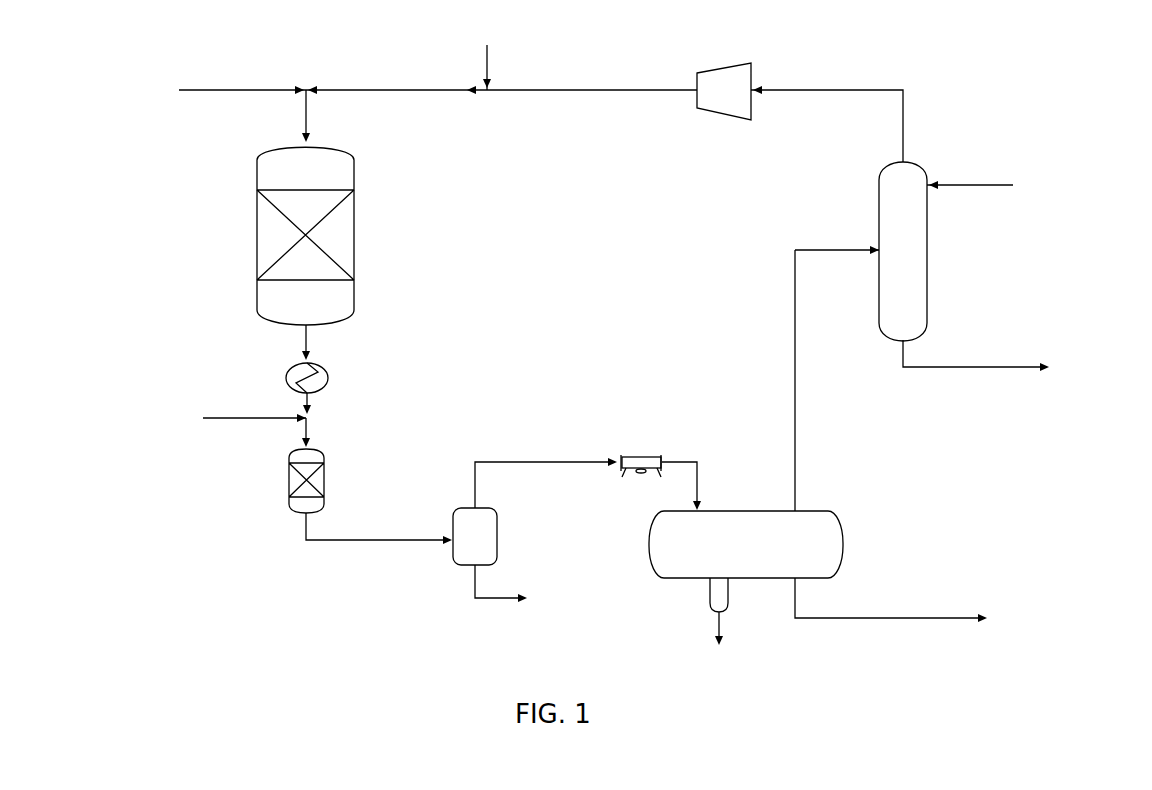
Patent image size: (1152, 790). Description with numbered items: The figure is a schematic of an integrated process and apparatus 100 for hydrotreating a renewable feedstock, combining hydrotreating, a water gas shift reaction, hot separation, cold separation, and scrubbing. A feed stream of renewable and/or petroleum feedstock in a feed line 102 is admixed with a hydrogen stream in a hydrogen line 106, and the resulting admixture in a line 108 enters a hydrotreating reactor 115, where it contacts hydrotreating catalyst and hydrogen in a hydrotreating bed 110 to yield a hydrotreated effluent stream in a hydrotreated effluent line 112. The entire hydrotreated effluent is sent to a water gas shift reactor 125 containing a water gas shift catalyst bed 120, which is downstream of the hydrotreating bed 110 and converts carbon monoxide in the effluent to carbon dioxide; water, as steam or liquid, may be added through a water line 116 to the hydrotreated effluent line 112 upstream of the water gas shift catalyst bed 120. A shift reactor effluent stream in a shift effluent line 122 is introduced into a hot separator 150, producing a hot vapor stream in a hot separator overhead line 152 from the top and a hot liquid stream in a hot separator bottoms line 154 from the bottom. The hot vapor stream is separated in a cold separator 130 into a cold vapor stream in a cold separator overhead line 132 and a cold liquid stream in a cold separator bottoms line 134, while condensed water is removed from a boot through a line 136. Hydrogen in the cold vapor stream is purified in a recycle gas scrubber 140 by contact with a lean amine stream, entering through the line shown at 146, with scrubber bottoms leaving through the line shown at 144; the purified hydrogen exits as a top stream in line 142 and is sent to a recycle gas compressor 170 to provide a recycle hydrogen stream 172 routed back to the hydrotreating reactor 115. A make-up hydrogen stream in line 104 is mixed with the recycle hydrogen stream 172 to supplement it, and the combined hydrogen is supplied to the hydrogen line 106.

The integrated process and apparatus 100 is at (1066, 68).
The feed line 102 is at (200, 91).
The make-up hydrogen line 104 is at (489, 58).
The hydrogen line 106 is at (340, 90).
The admixture line 108 is at (307, 112).
The hydrotreating bed 110 is at (355, 235).
The hydrotreated effluent line 112 is at (308, 340).
The hydrotreating reactor 115 is at (355, 177).
The water line 116 is at (218, 418).
The water gas shift catalyst bed 120 is at (289, 480).
The shift effluent line 122 is at (312, 541).
The water gas shift reactor 125 is at (324, 510).
The cold separator 130 is at (843, 540).
The cold separator overhead line 132 is at (795, 455).
The cold separator bottoms line 134 is at (824, 620).
The condensed water line 136 is at (716, 619).
The recycle gas scrubber 140 is at (928, 240).
The top stream line 142 is at (903, 112).
The absorber bottoms line 144 is at (921, 369).
The lean solvent line 146 is at (1005, 187).
The hot separator 150 is at (498, 530).
The hot separator overhead line 152 is at (497, 462).
The hot separator bottoms line 154 is at (475, 595).
The recycle gas compressor 170 is at (752, 112).
The recycle hydrogen stream 172 is at (614, 91).